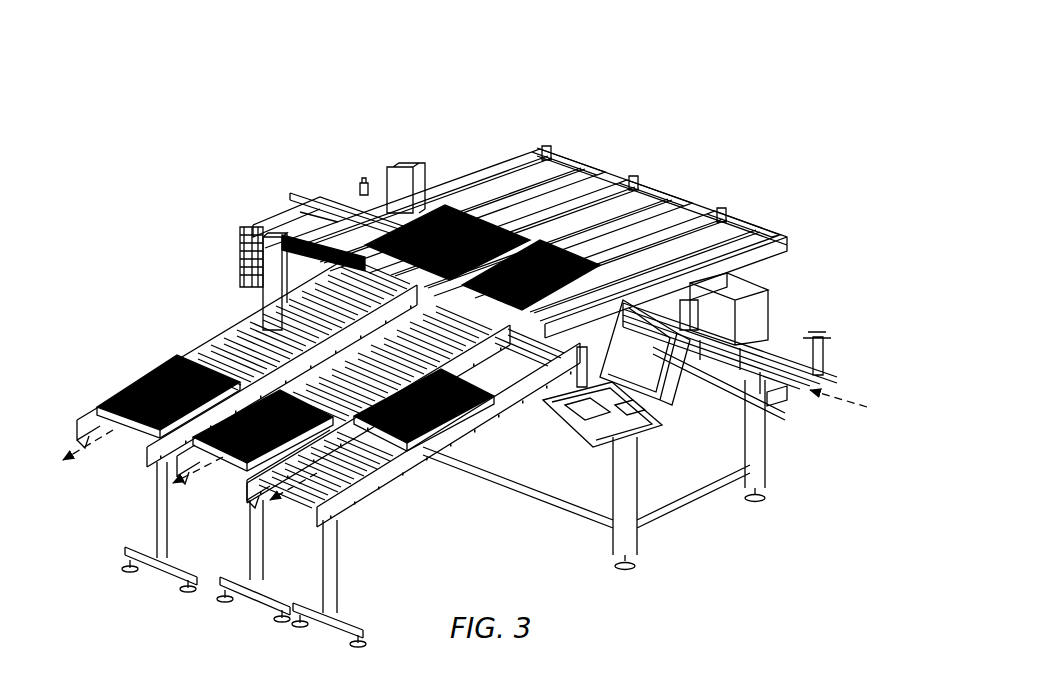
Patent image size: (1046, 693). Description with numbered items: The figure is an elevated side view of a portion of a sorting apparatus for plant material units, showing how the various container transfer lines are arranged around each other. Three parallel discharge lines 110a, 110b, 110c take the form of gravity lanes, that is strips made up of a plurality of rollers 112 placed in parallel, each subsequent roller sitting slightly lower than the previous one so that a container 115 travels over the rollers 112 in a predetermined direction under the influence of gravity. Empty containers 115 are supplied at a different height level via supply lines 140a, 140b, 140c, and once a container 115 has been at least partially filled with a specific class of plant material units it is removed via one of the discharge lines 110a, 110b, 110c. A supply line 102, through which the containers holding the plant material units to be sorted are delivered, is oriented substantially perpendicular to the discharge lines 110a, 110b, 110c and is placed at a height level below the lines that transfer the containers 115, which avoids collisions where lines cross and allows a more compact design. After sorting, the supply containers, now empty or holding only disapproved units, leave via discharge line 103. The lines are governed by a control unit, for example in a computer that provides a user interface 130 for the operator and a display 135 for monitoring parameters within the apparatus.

The supply line 102 is at (799, 397).
The discharge line 103 is at (303, 210).
The discharge line 110a is at (248, 348).
The discharge line 110b is at (383, 350).
The discharge line 110c is at (474, 373).
The rollers 112 is at (263, 318).
The container 115 is at (150, 366).
The user interface 130 is at (645, 426).
The display 135 is at (652, 392).
The supply line 140a is at (630, 133).
The supply line 140b is at (627, 202).
The supply line 140c is at (693, 236).